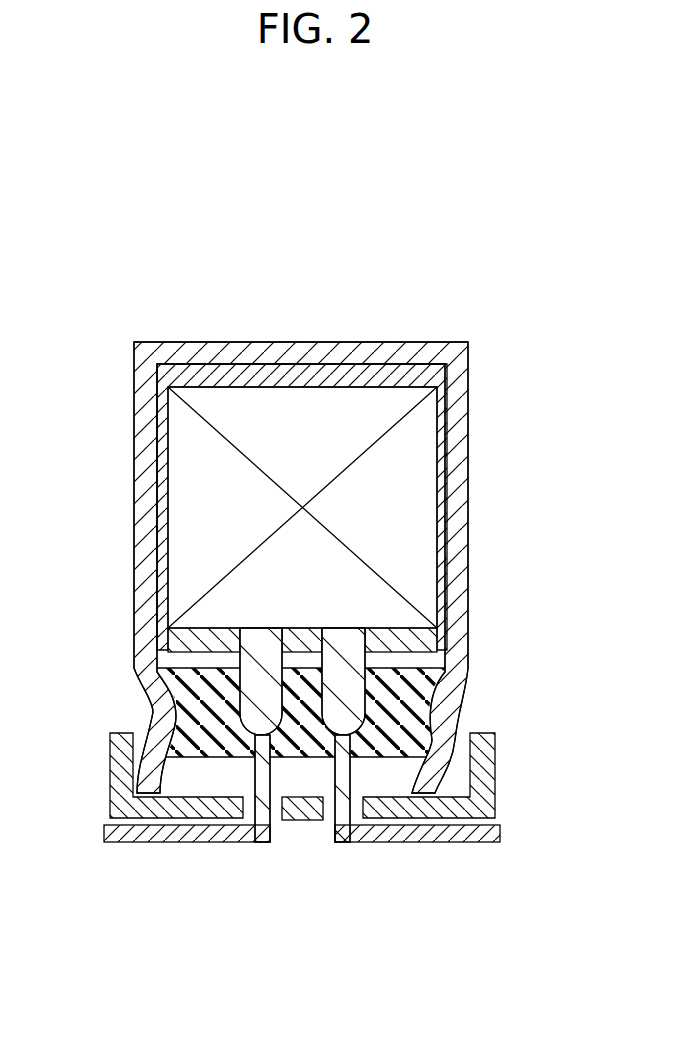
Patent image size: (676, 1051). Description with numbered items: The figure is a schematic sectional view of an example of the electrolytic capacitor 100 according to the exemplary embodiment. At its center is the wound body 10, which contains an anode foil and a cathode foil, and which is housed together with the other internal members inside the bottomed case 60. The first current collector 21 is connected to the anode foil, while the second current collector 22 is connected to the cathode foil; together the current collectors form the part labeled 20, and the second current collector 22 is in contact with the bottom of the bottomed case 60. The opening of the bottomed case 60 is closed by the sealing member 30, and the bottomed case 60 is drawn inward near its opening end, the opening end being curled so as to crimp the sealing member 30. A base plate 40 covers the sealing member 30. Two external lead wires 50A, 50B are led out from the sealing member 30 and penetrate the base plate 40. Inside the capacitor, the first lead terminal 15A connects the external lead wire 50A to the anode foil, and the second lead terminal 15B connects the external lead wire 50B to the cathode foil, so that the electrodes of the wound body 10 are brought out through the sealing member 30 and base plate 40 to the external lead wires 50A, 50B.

The electrolytic capacitor 100 is at (334, 328).
The bottomed case 60 is at (148, 356).
The container / package 20 is at (388, 508).
The second current collector 22 is at (447, 378).
The first current collector 21 is at (442, 640).
The wound body 10 is at (200, 528).
The first lead terminal 15A is at (258, 725).
The second lead terminal 15B is at (340, 680).
The sealing member 30 is at (430, 690).
The base plate 40 is at (483, 781).
The external lead wire 50A is at (182, 843).
The external lead wire 50B is at (428, 843).